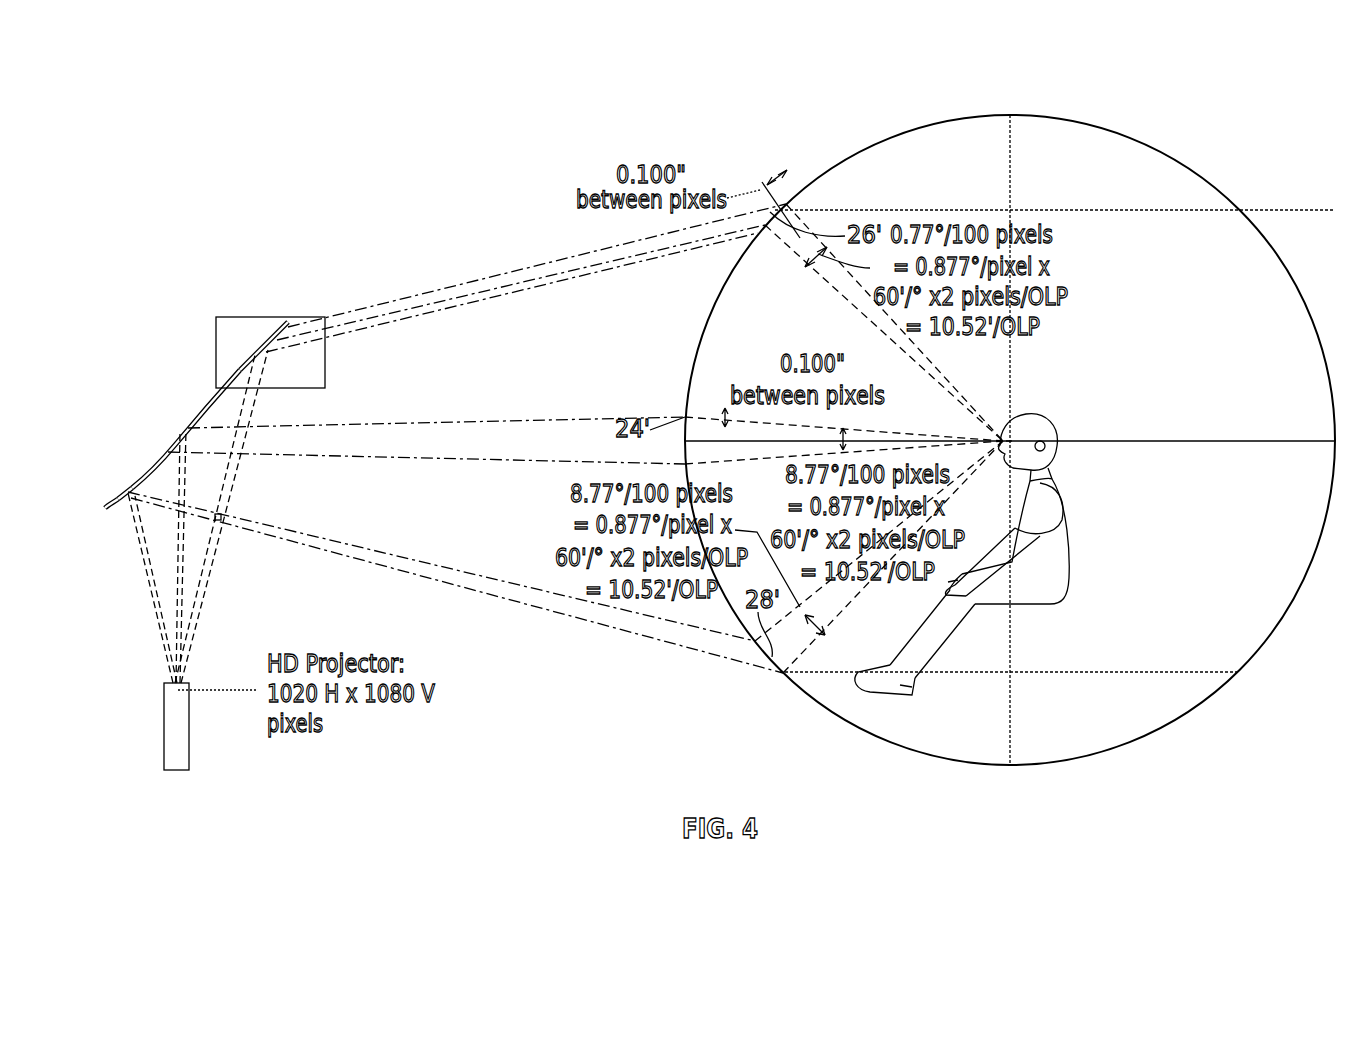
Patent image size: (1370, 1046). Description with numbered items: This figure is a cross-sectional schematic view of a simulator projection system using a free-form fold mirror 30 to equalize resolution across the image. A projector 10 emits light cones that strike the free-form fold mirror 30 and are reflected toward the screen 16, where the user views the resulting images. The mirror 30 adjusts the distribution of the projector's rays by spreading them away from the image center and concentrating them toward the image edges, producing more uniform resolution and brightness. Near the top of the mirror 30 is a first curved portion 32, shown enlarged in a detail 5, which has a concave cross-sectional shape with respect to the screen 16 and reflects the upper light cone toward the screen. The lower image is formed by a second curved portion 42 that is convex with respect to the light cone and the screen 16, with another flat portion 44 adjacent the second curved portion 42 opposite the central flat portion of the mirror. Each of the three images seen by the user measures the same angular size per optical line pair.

The detail view 5 is at (292, 316).
The projector 10 is at (190, 726).
The screen 16 is at (885, 132).
The free-form fold mirror 30 is at (197, 405).
The first curved portion 32 is at (265, 342).
The second curved portion 42 is at (126, 490).
The flat portion 44 is at (124, 506).